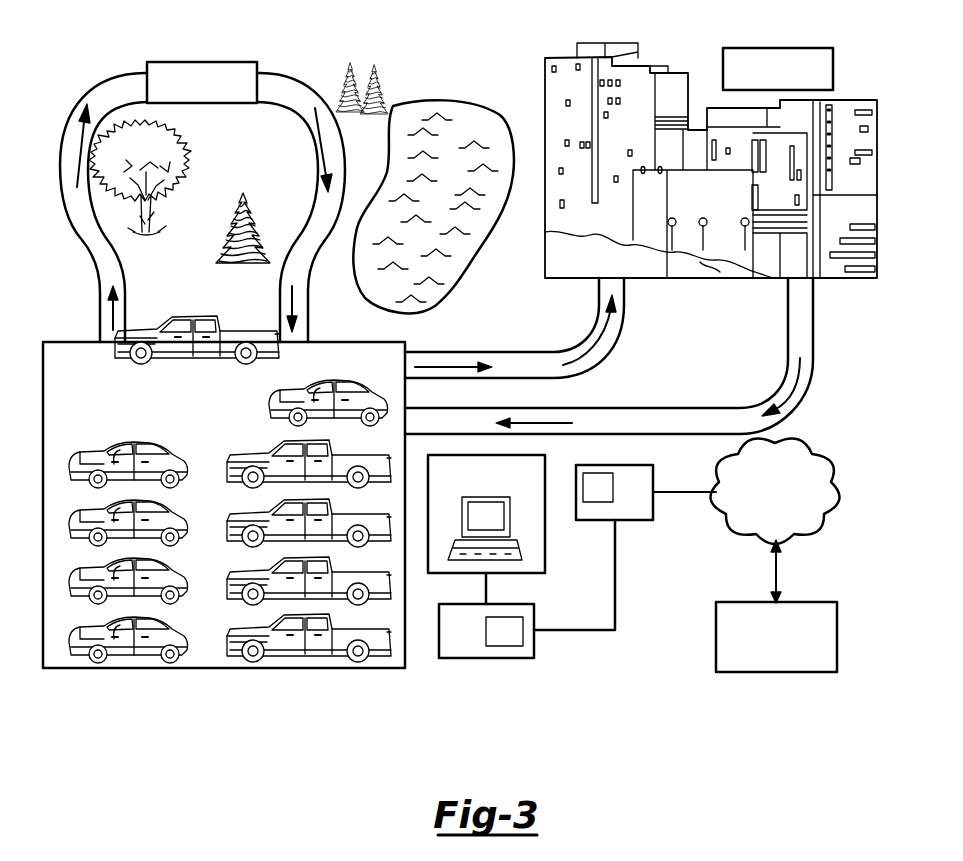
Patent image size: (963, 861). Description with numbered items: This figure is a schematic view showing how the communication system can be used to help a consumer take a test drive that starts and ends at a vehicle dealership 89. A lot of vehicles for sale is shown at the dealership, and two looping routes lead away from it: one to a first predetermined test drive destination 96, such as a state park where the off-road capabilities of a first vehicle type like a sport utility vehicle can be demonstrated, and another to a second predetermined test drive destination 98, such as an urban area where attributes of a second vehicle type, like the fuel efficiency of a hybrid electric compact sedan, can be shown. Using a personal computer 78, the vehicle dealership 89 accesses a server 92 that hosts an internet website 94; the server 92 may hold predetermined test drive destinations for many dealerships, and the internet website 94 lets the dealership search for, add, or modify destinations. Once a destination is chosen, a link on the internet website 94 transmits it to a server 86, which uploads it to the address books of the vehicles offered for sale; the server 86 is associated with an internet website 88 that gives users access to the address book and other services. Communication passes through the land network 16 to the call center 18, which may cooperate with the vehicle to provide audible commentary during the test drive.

The land network 16 is at (769, 494).
The call center 18 is at (837, 640).
The personal computer 78 is at (478, 524).
The server 86 is at (625, 500).
The internet website 88 is at (590, 500).
The vehicle dealership 89 is at (513, 514).
The server 92 is at (454, 639).
The internet website 94 is at (497, 639).
The first predetermined test drive destination 96 is at (202, 62).
The second predetermined test drive destination 98 is at (780, 48).